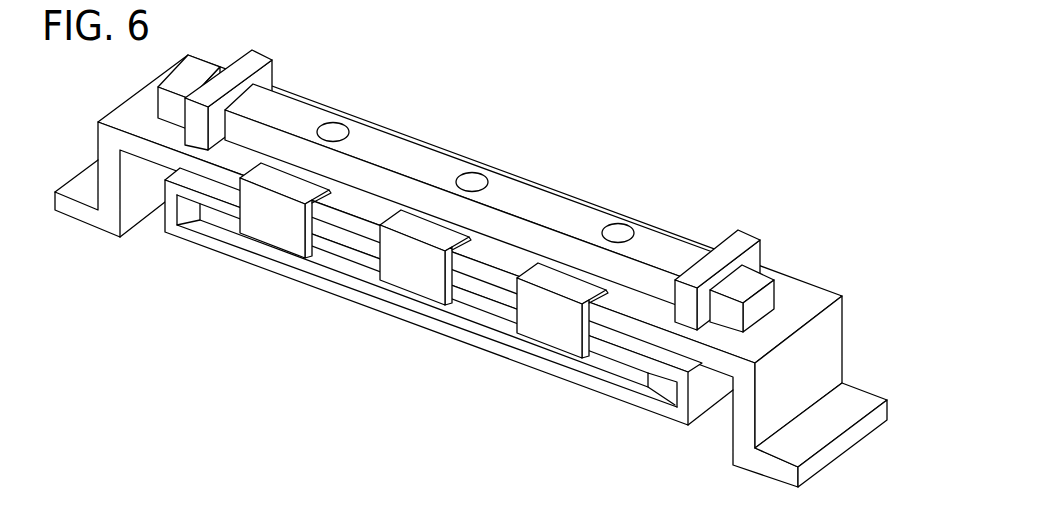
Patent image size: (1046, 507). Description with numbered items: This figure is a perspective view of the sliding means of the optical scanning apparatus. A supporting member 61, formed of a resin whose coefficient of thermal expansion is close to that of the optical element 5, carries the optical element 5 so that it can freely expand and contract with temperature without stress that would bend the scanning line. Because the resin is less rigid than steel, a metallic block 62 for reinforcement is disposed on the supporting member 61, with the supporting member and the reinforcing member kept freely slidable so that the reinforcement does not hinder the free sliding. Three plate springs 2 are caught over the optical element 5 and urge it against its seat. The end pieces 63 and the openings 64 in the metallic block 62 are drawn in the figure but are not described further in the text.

The supporting member 61 is at (128, 110).
The metallic block 62 is at (408, 150).
The stopper 63 is at (257, 60).
The hole 64 is at (618, 228).
The plate spring 2 is at (267, 230).
The optical element 5 is at (448, 332).